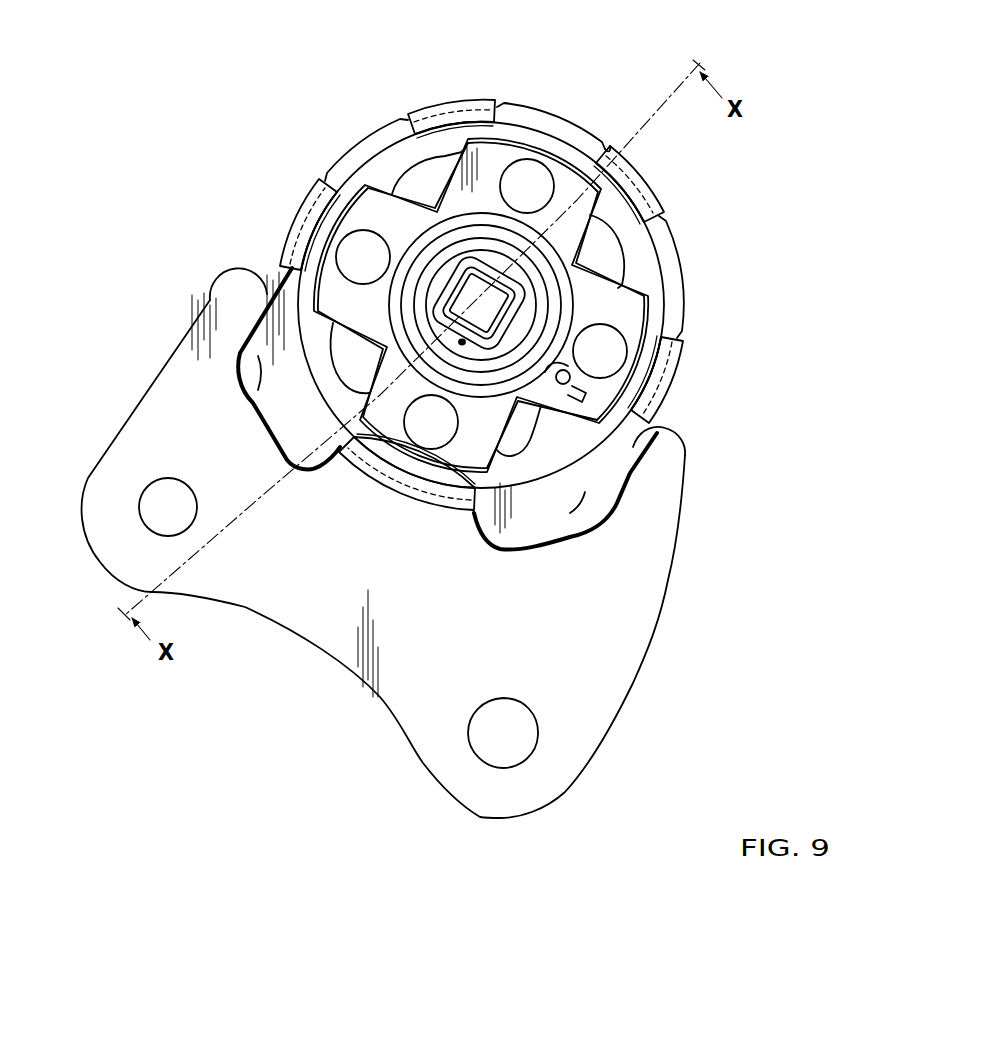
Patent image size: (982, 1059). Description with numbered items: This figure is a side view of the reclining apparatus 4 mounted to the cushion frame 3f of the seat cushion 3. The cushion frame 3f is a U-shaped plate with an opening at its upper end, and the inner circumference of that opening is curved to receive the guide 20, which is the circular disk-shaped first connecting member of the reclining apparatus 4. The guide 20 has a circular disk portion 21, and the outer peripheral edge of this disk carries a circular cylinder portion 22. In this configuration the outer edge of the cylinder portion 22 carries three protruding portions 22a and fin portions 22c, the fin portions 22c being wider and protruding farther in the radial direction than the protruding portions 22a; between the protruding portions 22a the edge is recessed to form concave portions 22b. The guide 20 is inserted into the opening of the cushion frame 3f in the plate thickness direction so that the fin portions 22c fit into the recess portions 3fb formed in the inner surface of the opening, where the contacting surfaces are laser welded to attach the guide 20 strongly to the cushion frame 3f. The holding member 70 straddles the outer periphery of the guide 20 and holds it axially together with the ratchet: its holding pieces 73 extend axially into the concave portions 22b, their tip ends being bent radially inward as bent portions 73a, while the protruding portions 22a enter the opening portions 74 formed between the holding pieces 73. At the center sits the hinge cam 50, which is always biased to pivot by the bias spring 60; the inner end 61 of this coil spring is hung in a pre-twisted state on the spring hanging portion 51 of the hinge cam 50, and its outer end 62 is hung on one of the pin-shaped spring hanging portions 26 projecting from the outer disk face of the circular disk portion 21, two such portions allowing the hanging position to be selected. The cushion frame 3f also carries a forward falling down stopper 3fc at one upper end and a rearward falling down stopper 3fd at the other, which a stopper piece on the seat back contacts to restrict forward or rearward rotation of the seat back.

The cushion frame 3f is at (370, 559).
The seat cushion 3 is at (160, 373).
The forward falling down stopper 3fc is at (260, 272).
The rearward falling down stopper 3fd is at (673, 430).
The recess portions 3fb is at (270, 417).
The spring hanging portions 26 is at (578, 390).
The circular cylinder portion 22 is at (407, 125).
The protruding portions 22a is at (538, 273).
The opening portions 74 is at (540, 120).
The concave portions 22b is at (422, 107).
The fin portions 22c is at (258, 390).
The holding pieces 73 is at (467, 106).
The bent portion 73a is at (450, 115).
The holding member 70 is at (610, 147).
The guide 20 is at (535, 259).
The circular disk portion 21 is at (617, 217).
The bias spring 60 is at (432, 238).
The inner end 61 is at (462, 342).
The outer end 62 is at (548, 382).
The hinge cam 50 is at (317, 302).
The spring hanging portion 51 is at (455, 293).
The reclining apparatus 4 is at (663, 63).